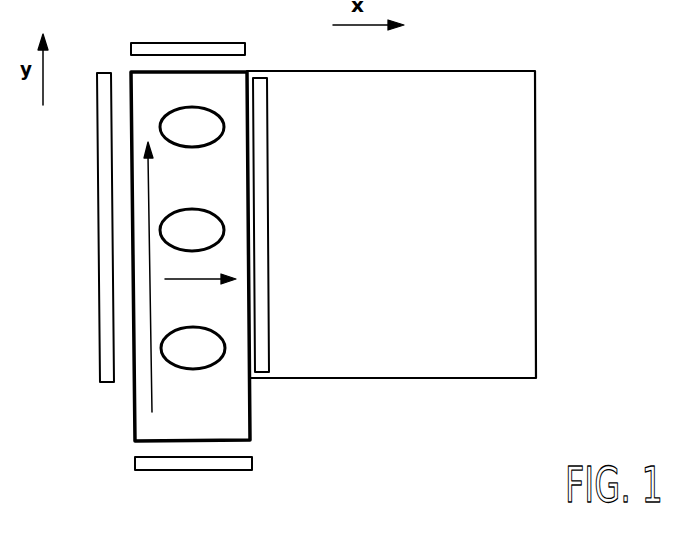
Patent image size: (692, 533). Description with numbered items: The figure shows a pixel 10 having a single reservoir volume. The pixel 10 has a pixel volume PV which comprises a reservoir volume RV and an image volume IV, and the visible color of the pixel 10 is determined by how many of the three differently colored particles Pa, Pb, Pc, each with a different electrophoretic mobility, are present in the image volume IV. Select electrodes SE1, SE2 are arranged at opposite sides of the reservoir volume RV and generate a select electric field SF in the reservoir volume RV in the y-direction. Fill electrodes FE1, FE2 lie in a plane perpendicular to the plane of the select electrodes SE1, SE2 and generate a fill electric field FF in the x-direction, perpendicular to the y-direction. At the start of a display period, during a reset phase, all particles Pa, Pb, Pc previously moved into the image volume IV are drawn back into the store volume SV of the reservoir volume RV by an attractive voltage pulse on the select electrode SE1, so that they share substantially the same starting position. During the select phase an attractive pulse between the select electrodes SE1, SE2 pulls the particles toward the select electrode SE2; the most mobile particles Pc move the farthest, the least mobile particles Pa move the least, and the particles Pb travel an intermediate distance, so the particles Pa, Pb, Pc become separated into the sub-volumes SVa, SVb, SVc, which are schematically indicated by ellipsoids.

The pixel 10 is at (537, 62).
The image volume IV is at (503, 177).
The pixel volume PV is at (546, 362).
The reservoir volume RV is at (150, 92).
The store volume SV is at (190, 260).
The fill electrode FE1 is at (77, 227).
The fill electrode FE2 is at (280, 225).
The select electrode SE1 is at (193, 482).
The select electrode SE2 is at (188, 34).
The particles Pa is at (193, 348).
The particles Pb is at (192, 230).
The particles Pc is at (192, 127).
The sub-volume SVa is at (195, 369).
The sub-volume SVb is at (186, 210).
The sub-volume SVc is at (182, 107).
The select electric field SF is at (162, 277).
The fill electric field FF is at (200, 291).